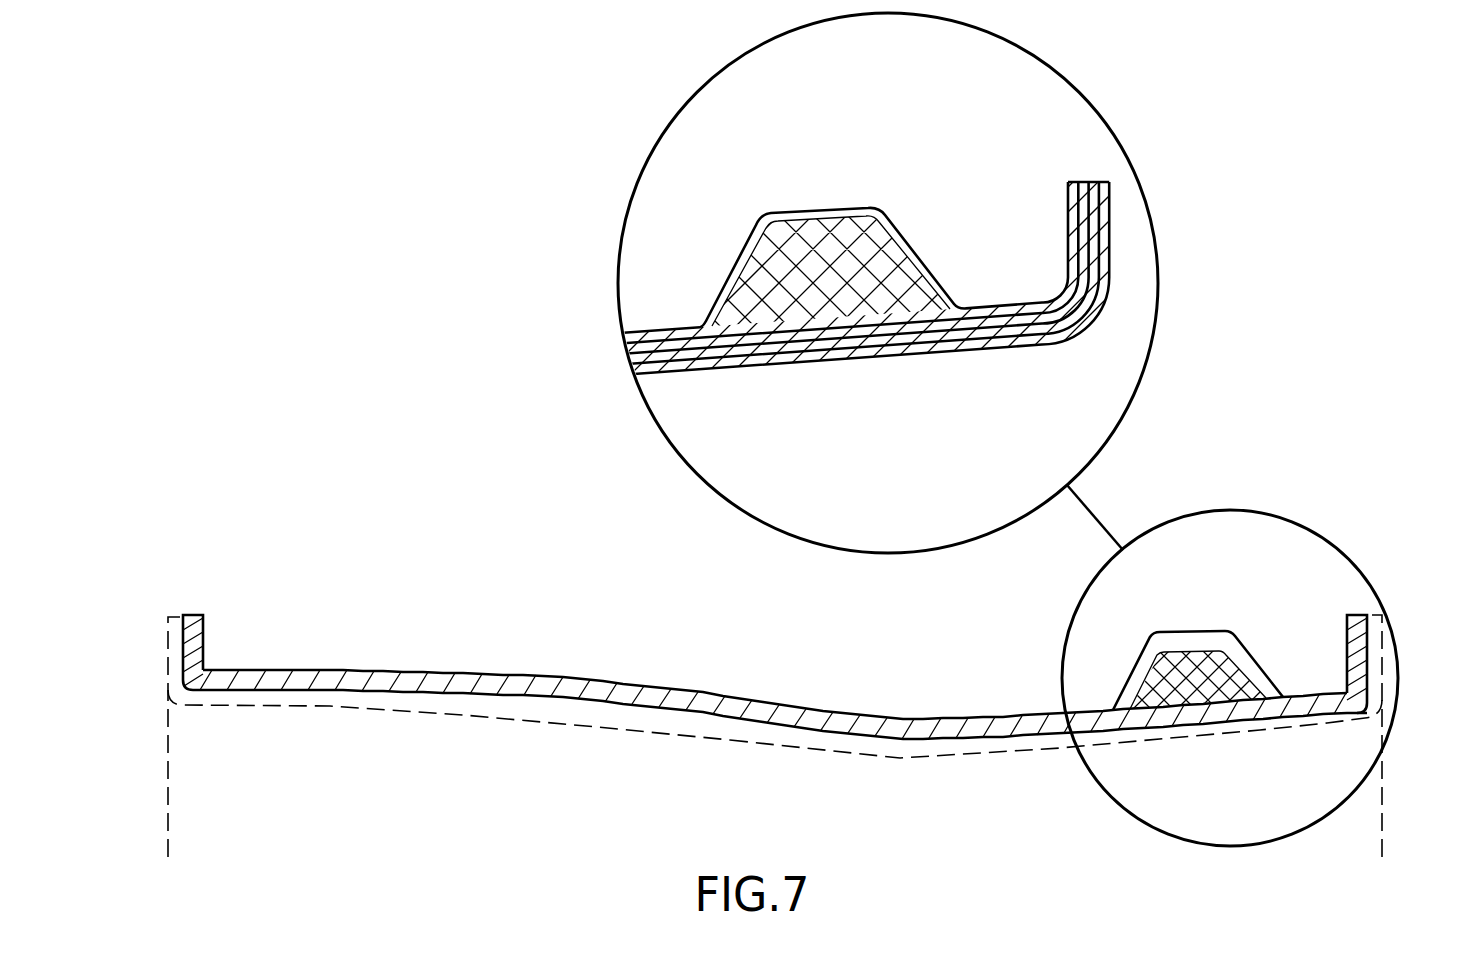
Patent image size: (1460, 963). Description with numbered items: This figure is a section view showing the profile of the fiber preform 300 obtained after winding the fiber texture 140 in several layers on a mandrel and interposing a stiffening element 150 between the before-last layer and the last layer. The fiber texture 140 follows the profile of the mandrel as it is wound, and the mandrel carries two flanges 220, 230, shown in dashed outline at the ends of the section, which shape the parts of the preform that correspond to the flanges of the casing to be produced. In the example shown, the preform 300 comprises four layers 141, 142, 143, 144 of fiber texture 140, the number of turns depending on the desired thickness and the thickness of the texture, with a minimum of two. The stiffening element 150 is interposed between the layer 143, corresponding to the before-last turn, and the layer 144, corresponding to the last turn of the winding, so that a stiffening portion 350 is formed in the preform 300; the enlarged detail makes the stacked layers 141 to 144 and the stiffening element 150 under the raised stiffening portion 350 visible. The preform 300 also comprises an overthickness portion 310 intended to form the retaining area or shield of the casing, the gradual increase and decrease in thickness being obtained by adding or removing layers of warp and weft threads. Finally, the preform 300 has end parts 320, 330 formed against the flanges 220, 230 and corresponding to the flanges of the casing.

The fiber texture 140 is at (953, 298).
The layer 141 is at (655, 372).
The layer 142 is at (637, 358).
The layer 143 is at (630, 351).
The layer 144 is at (748, 268).
The stiffening element 150 is at (1173, 672).
The flange 220 is at (176, 652).
The flange 230 is at (1376, 661).
The fiber preform 300 is at (775, 417).
The overthickness portion 310 is at (556, 674).
The end part 320 is at (197, 639).
The end part 330 is at (1355, 645).
The stiffening portion 350 is at (1213, 620).